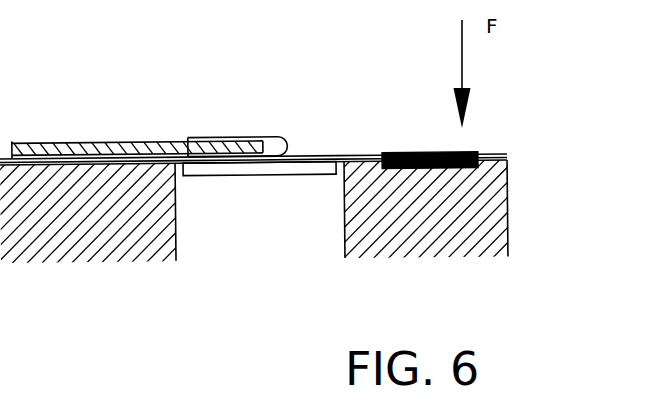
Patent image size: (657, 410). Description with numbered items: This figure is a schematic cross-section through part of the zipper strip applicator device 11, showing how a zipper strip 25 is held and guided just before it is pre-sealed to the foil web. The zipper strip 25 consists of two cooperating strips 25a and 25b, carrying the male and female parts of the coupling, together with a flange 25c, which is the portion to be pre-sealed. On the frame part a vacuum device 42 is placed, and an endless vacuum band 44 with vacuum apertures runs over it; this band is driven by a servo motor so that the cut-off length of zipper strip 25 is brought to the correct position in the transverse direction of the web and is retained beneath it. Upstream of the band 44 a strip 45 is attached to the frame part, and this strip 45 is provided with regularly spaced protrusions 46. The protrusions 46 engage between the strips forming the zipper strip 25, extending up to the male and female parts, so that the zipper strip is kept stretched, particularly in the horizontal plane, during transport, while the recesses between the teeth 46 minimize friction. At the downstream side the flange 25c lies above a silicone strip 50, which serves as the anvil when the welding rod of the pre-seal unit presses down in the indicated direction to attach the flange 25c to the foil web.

The zipper strip applicator device 11 is at (539, 299).
The zipper strip 25 is at (332, 156).
The first cooperating strip 25a is at (271, 136).
The second cooperating strip 25b is at (277, 161).
The flange 25c is at (450, 152).
The vacuum device 42 is at (97, 243).
The endless vacuum band 44 is at (213, 176).
The strip 45 is at (55, 141).
The protrusions 46 is at (226, 150).
The silicone strip 50 is at (480, 153).